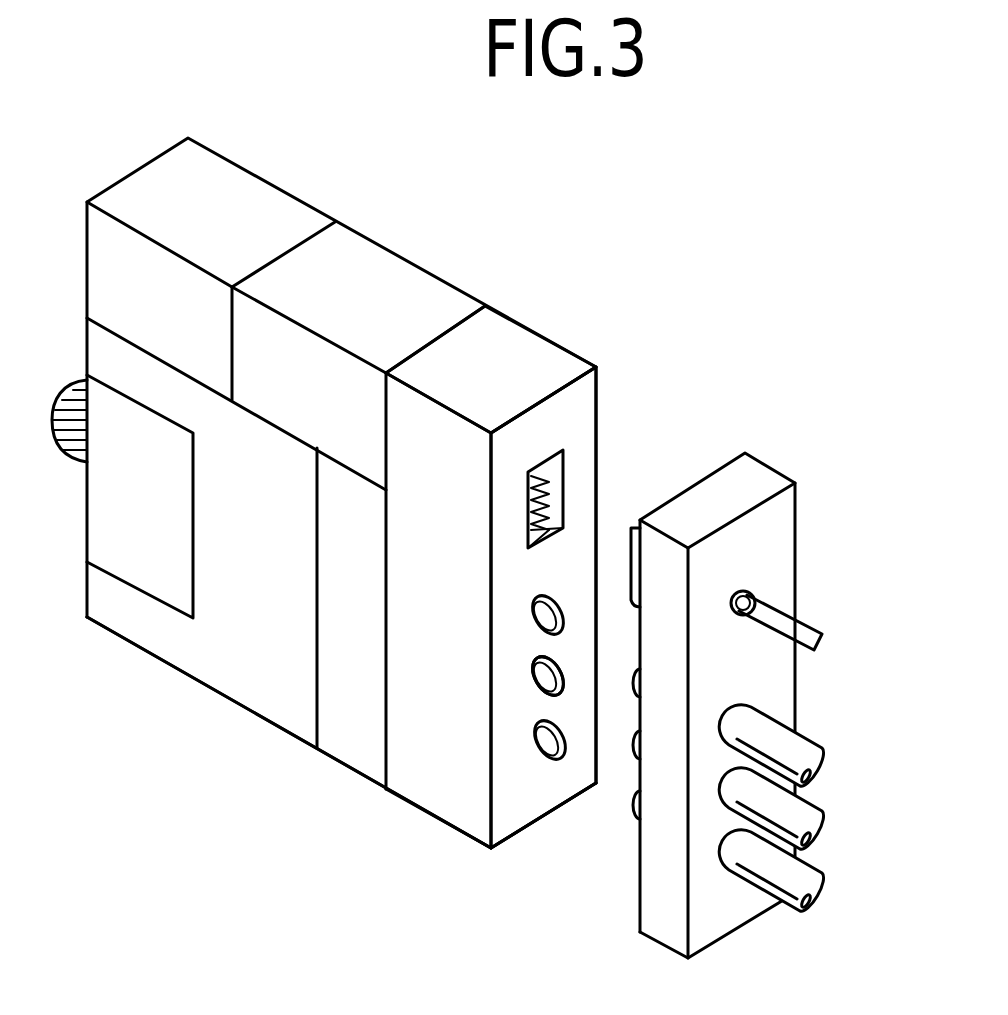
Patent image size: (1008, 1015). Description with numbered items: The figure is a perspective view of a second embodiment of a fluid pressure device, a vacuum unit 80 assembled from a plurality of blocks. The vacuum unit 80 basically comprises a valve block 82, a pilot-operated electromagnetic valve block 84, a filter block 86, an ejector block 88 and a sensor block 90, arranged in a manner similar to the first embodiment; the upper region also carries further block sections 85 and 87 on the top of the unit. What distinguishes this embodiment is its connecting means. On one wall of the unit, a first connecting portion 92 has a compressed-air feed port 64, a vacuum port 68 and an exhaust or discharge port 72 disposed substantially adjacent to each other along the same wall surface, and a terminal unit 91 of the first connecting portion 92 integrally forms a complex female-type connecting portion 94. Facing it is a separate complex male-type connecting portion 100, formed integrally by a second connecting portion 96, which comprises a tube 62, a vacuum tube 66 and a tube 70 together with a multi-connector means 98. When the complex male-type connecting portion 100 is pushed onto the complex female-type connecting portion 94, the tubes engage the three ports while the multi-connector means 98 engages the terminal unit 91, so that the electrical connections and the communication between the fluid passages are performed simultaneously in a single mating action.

The vacuum unit 80 is at (371, 170).
The valve block 82 is at (244, 683).
The pilot-operated electromagnetic valve block 84 is at (138, 167).
The top panel section 85 is at (392, 273).
The filter block 86 is at (128, 558).
The top panel 87 is at (235, 192).
The ejector block 88 is at (338, 735).
The sensor block 90 is at (433, 808).
The terminal unit 91 is at (557, 467).
The first connecting portion 92 is at (514, 641).
The complex female-type connecting portion 94 is at (562, 415).
The second connecting portion 96 is at (628, 772).
The multi-connector means 98 is at (632, 520).
The complex male-type connecting portion 100 is at (763, 444).
The tube 62 is at (803, 748).
The compressed-air feed port 64 is at (536, 615).
The vacuum tube 66 is at (808, 896).
The vacuum port 68 is at (537, 742).
The tube 70 is at (810, 808).
The exhaust or discharge port 72 is at (536, 678).